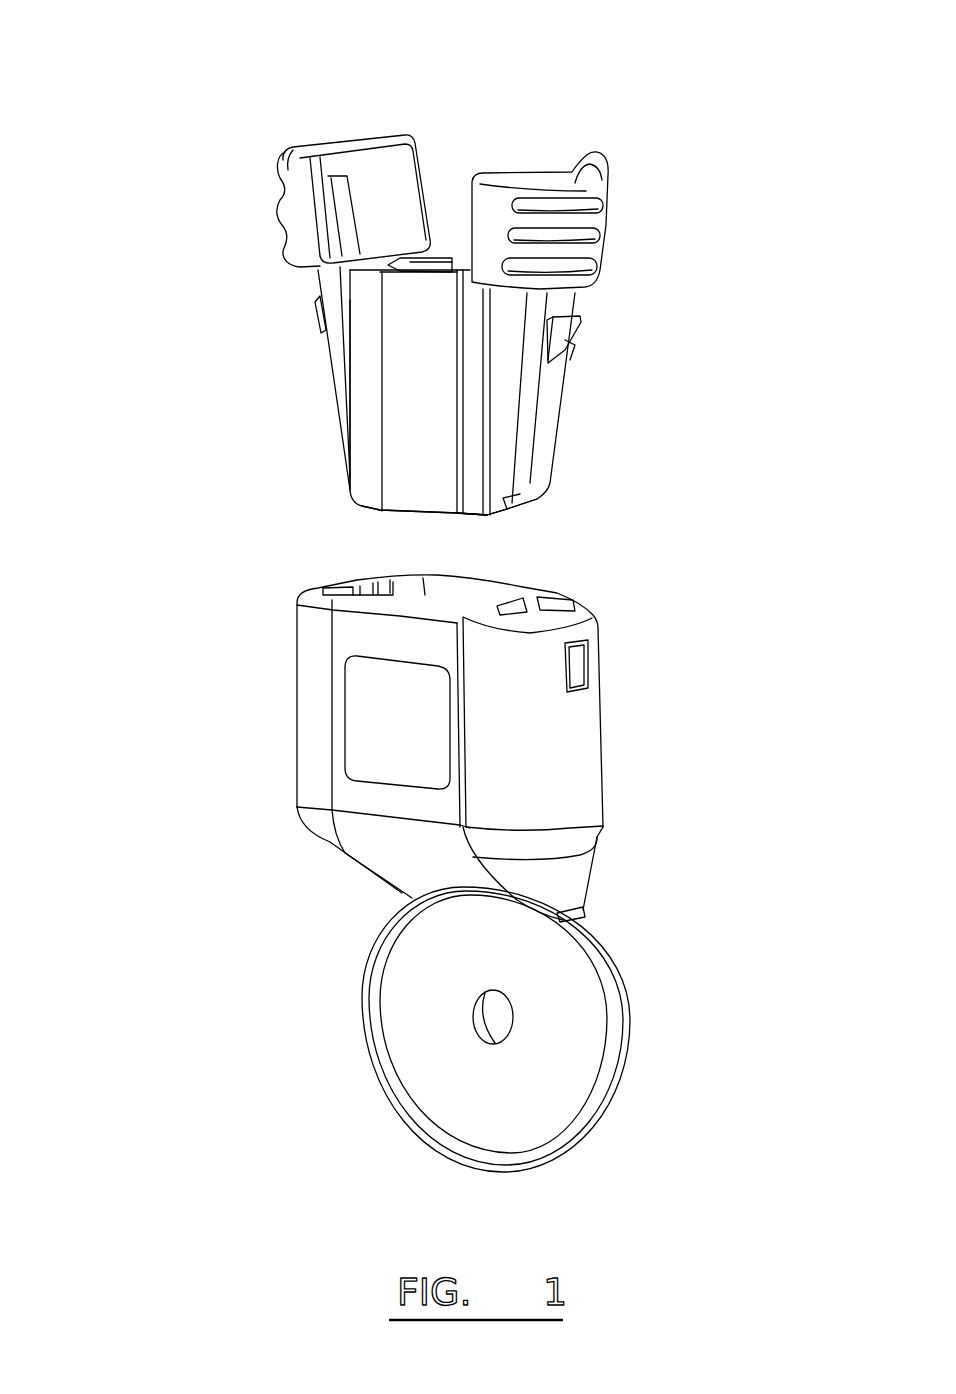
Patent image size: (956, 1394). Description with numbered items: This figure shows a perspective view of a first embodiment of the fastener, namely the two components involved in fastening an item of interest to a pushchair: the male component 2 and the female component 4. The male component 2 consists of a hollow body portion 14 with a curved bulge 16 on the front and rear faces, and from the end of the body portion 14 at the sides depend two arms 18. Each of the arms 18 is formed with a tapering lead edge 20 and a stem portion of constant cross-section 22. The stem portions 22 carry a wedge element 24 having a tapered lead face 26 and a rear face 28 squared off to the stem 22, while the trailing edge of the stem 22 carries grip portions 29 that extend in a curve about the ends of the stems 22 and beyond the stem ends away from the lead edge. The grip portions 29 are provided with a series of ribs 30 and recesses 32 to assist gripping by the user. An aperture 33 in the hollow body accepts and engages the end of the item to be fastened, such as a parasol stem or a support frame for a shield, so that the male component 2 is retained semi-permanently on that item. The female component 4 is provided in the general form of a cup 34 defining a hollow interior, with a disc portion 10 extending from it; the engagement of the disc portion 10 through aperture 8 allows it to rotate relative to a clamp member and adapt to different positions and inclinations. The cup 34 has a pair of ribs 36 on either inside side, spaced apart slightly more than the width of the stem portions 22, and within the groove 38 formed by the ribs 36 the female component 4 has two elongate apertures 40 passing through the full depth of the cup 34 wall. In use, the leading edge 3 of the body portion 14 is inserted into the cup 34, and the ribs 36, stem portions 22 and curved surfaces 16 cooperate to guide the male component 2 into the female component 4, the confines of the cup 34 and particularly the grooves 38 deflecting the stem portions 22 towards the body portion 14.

The male component 2 is at (623, 270).
The leading edge 3 is at (460, 527).
The female component 4 is at (615, 777).
The aperture 8 is at (507, 1022).
The disc portion 10 is at (552, 1077).
The hollow body portion 14 is at (287, 485).
The curved bulge 16 is at (415, 394).
The arms 18 is at (338, 352).
The tapering lead edge 20 is at (540, 488).
The stem portions 22 is at (343, 227).
The wedge element 24 is at (593, 313).
The tapered lead face 26 is at (318, 312).
The rear face 28 is at (318, 298).
The grip portions 29 is at (340, 135).
The ribs 30 is at (603, 175).
The recesses 32 is at (280, 180).
The aperture 33 is at (440, 258).
The cup 34 is at (612, 645).
The ribs 36 is at (383, 583).
The groove 38 is at (345, 733).
The apertures 40 is at (578, 670).